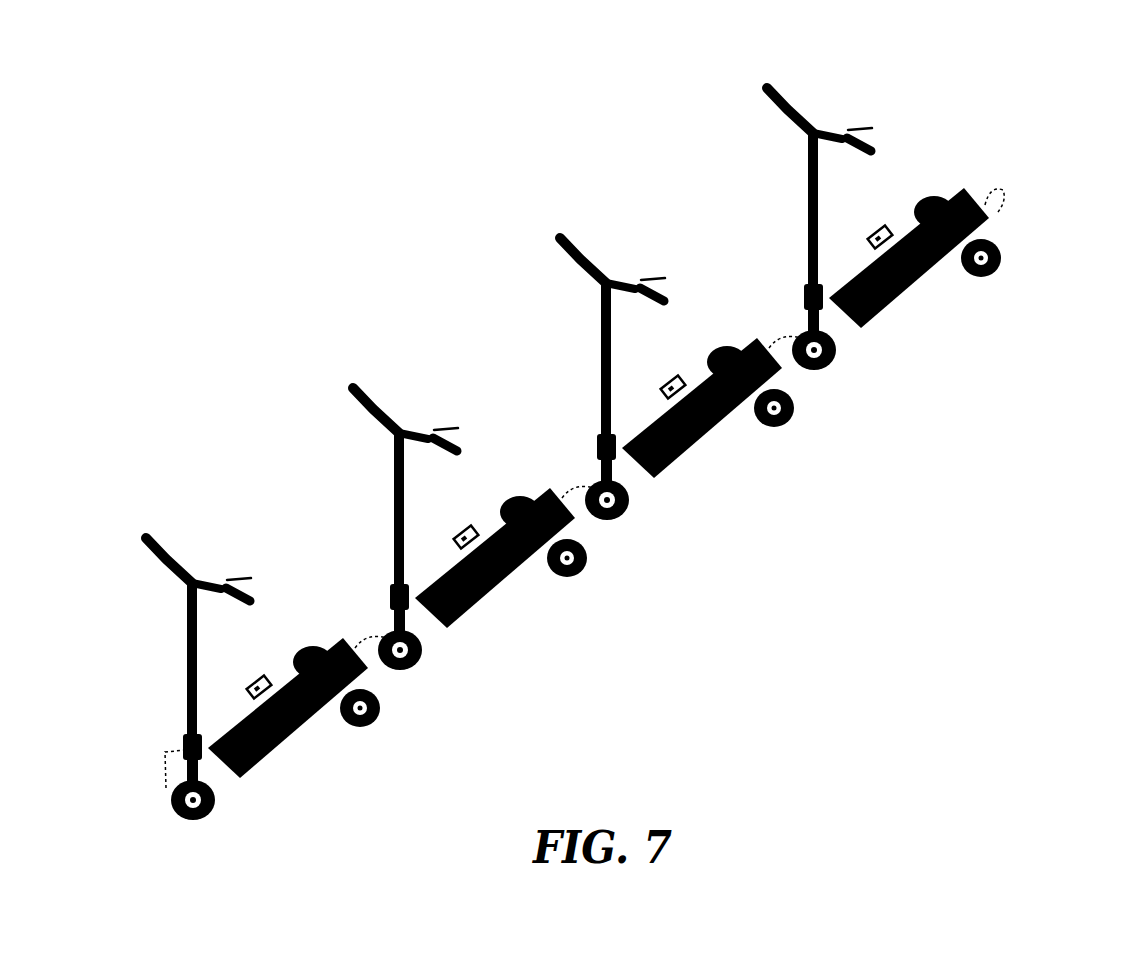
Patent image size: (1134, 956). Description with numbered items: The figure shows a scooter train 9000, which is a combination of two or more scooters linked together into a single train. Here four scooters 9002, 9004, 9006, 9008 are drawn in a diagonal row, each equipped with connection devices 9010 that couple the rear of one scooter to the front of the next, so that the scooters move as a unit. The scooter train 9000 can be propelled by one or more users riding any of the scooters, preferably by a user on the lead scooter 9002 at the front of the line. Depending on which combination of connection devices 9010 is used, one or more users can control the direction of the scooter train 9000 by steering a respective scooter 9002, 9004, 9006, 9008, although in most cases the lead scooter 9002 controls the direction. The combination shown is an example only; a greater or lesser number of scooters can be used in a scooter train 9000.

The scooter train 9000 is at (887, 70).
The lead scooter 9002 is at (267, 533).
The scooter 9004 is at (500, 415).
The scooter 9006 is at (712, 294).
The scooter 9008 is at (941, 155).
The connection device 9010 is at (143, 757).